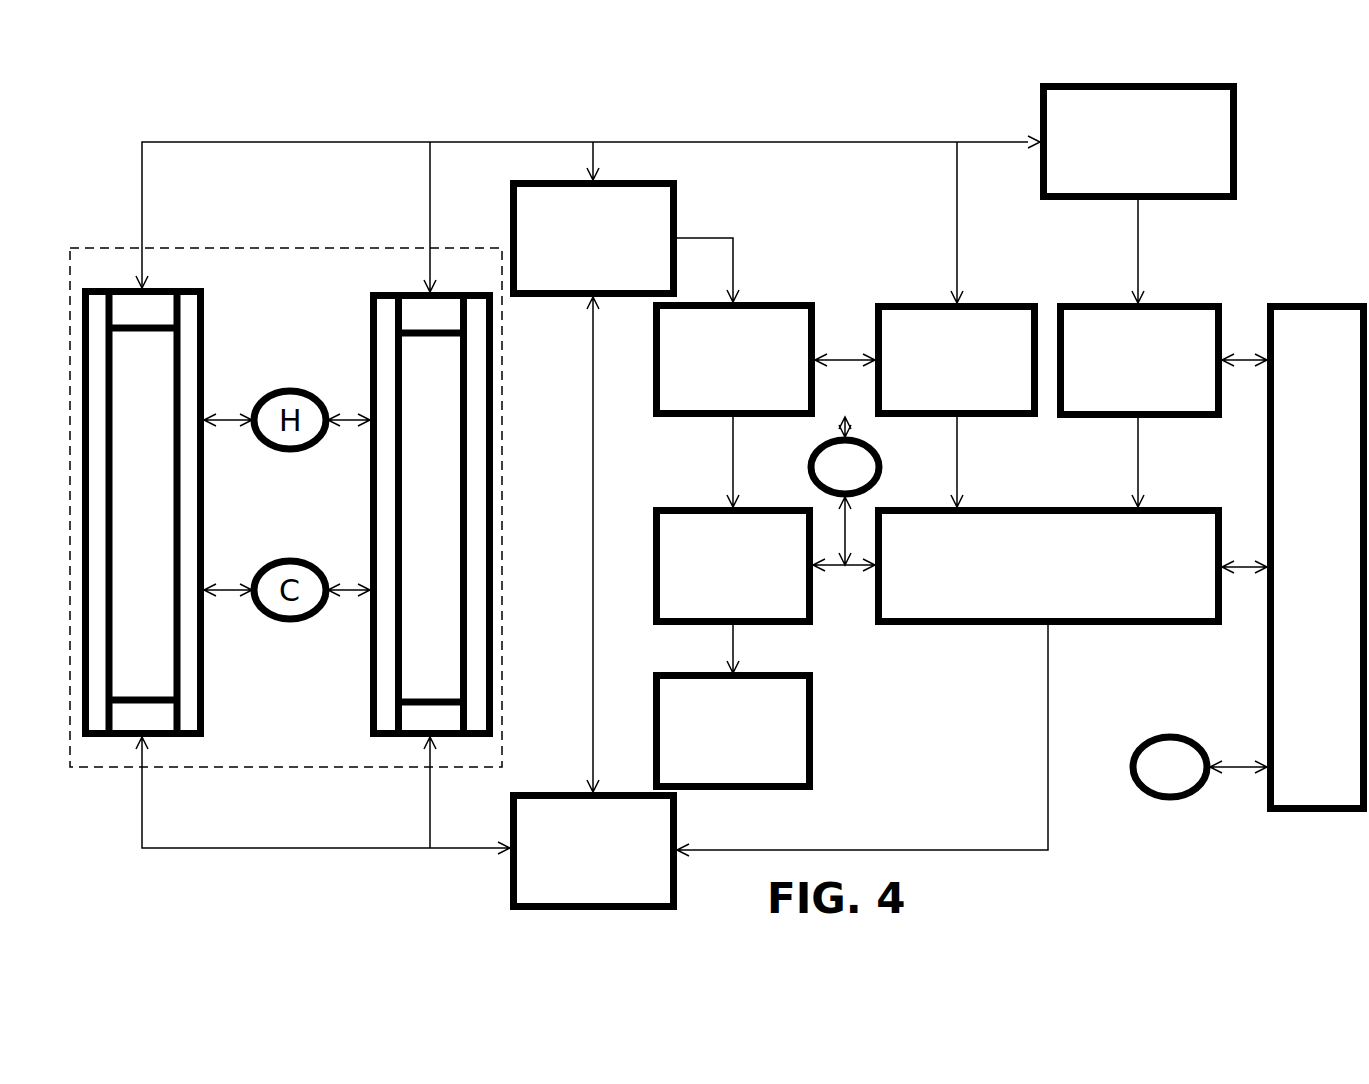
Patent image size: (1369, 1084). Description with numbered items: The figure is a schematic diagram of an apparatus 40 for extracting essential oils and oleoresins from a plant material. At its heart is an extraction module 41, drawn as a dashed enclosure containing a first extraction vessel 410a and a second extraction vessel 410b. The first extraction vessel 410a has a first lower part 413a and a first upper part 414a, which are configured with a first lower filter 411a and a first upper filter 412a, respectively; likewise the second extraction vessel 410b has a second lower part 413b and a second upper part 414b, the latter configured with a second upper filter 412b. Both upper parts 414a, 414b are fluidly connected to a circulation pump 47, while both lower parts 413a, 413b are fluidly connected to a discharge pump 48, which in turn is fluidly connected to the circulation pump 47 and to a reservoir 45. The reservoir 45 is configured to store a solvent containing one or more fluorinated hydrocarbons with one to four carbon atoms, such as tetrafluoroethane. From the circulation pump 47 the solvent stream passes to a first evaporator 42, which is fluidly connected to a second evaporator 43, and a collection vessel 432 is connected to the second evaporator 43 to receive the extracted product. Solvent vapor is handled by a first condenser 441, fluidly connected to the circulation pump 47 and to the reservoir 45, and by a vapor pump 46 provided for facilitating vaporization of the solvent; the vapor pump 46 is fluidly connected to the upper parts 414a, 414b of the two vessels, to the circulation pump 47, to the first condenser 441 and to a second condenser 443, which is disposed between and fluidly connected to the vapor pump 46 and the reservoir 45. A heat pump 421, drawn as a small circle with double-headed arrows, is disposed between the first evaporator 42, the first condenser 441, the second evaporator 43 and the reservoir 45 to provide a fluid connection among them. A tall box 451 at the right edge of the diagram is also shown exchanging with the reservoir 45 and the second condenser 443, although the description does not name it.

The apparatus 40 is at (85, 129).
The extraction module 41 is at (120, 248).
The first extraction vessel 410a is at (83, 625).
The second extraction vessel 410b is at (478, 548).
The first lower filter 411a is at (147, 473).
The first upper filter 412a is at (157, 307).
The second upper filter 412b is at (420, 310).
The first lower part 413a is at (145, 707).
The second lower part 413b is at (438, 722).
The first upper part 414a is at (147, 373).
The second upper part 414b is at (430, 353).
The first evaporator 42 is at (703, 363).
The heat pump 421 is at (925, 465).
The second evaporator 43 is at (695, 568).
The collection vessel 432 is at (777, 723).
The first condenser 441 is at (972, 333).
The second condenser 443 is at (1180, 323).
The reservoir 45 is at (988, 597).
The cooling unit 451 is at (1302, 613).
The vapor pump 46 is at (1200, 150).
The circulation pump 47 is at (635, 220).
The discharge pump 48 is at (552, 872).